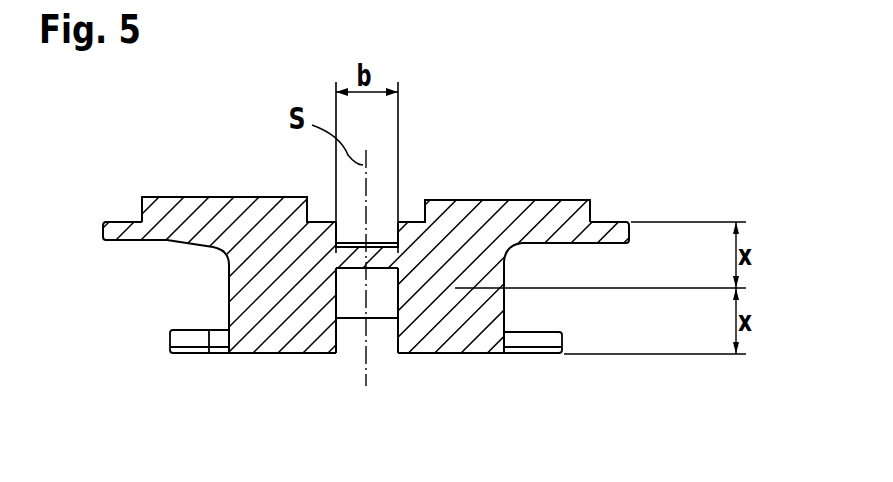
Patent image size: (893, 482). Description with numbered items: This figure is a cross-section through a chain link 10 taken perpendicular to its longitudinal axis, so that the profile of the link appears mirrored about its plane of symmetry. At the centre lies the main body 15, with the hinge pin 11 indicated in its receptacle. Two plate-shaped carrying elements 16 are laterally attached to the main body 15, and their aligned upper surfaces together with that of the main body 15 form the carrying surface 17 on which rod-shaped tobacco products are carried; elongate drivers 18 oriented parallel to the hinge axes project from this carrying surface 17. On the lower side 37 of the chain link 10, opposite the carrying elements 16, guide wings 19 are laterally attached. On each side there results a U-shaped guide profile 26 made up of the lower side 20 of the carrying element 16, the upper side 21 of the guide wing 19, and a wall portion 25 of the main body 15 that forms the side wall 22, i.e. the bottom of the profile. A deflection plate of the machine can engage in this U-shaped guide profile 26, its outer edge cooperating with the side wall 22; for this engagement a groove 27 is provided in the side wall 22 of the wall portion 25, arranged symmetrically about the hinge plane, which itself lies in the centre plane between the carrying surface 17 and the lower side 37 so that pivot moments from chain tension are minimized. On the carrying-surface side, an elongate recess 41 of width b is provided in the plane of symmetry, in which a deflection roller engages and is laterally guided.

The chain link 10 is at (716, 173).
The hinge pin 11 is at (377, 305).
The main body 15 is at (272, 366).
The carrying element 16 is at (162, 235).
The carrying surface 17 is at (125, 220).
The driver 18 is at (220, 206).
The guide wing 19 is at (193, 340).
The lower side of the carrying element 20 is at (203, 247).
The upper side of the guide wing 21 is at (185, 330).
The side wall 22 is at (227, 267).
The wall portion 25 is at (236, 280).
The U-shaped guide profile 26 is at (524, 366).
The groove 27 is at (228, 288).
The lower side 37 is at (442, 360).
The recess 41 is at (377, 245).